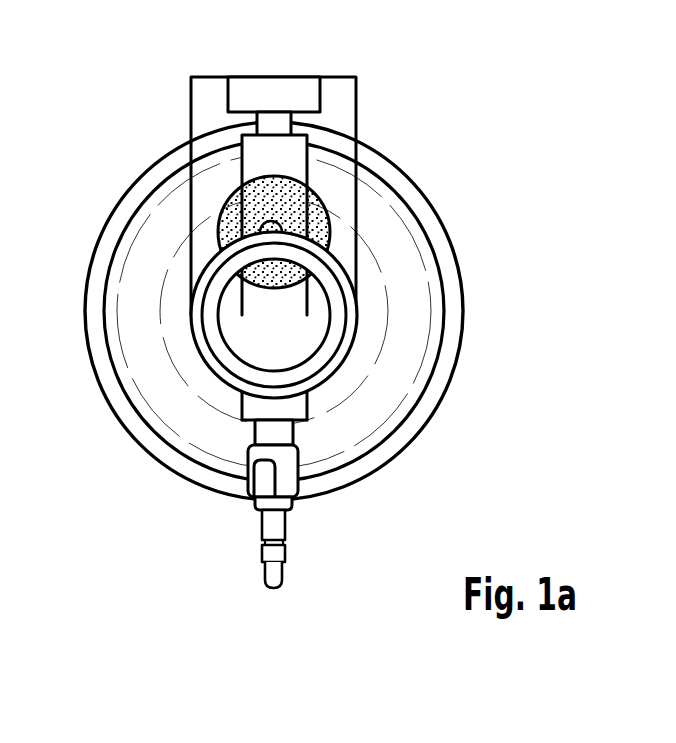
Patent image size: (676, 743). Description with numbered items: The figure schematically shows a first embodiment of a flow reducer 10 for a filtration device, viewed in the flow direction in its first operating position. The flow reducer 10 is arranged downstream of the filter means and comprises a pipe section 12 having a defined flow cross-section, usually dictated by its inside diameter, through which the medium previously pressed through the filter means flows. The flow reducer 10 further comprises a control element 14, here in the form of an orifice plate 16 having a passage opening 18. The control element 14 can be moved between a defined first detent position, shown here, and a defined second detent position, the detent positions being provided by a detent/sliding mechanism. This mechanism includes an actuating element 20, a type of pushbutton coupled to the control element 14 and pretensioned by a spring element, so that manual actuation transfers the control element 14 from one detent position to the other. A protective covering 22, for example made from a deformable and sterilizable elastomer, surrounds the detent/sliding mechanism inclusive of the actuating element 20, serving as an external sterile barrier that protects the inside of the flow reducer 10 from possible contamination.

The flow reducer 10 is at (431, 156).
The pipe section 12 is at (302, 333).
The control element 14 is at (217, 202).
The orifice plate 16 is at (323, 202).
The passage opening 18 is at (263, 223).
The actuating element 20 is at (266, 89).
The protective covering 22 is at (357, 96).